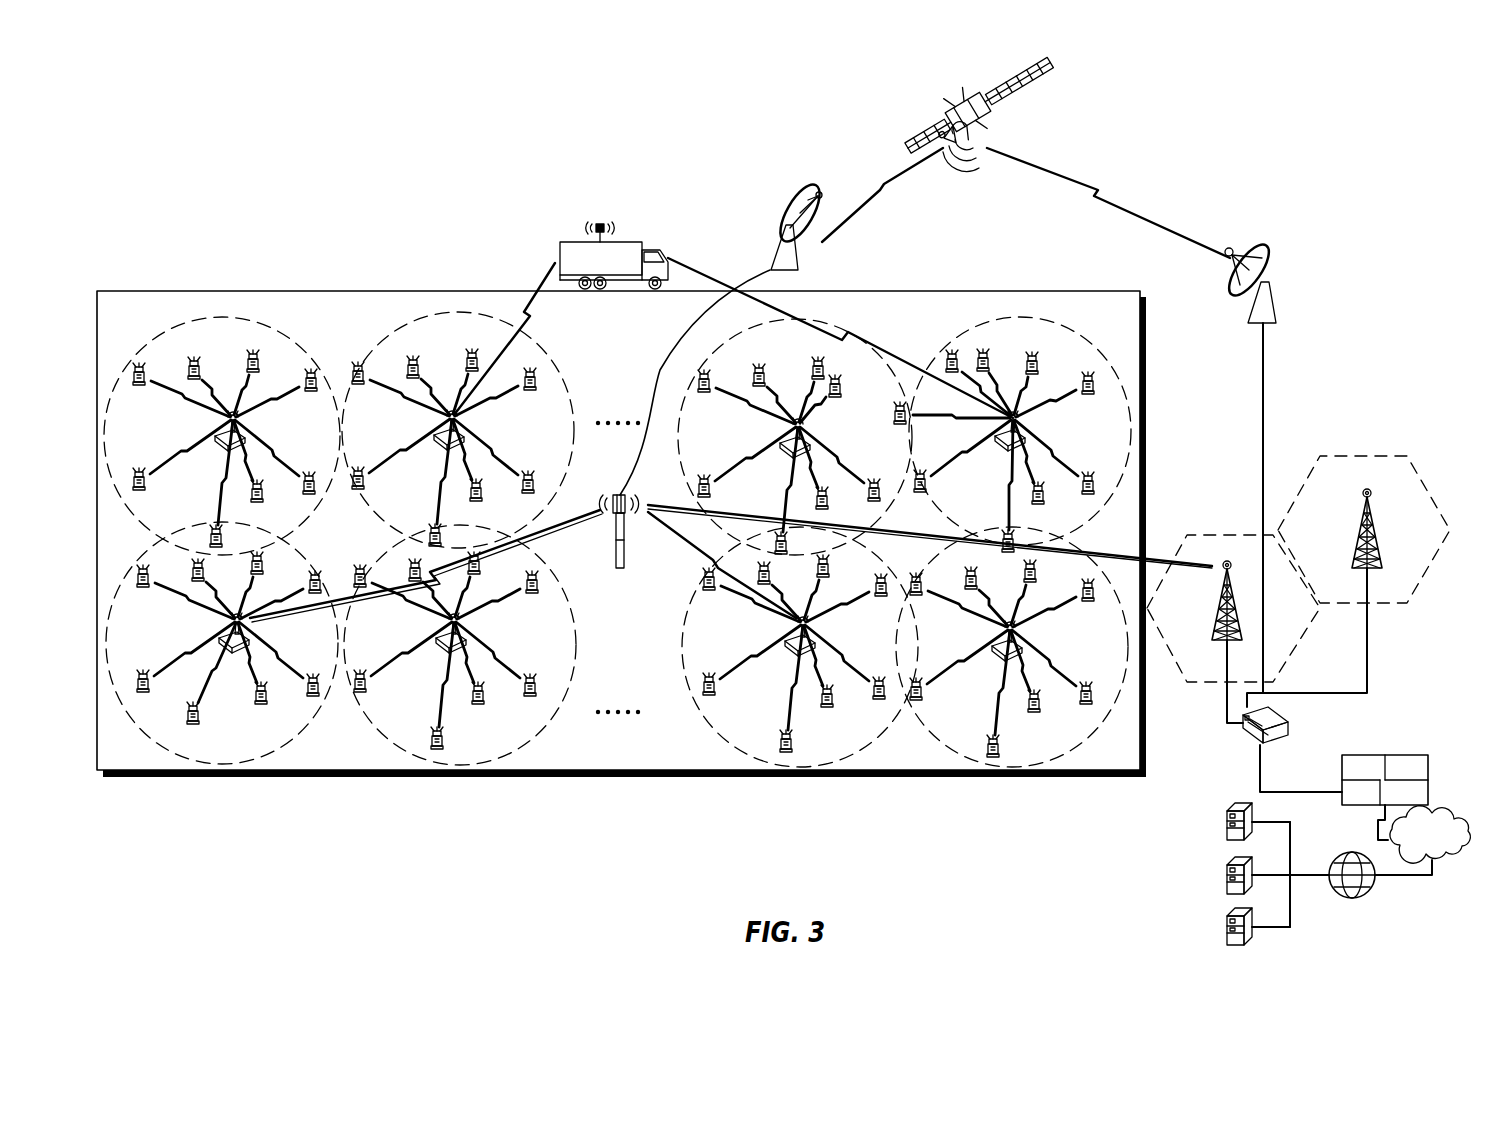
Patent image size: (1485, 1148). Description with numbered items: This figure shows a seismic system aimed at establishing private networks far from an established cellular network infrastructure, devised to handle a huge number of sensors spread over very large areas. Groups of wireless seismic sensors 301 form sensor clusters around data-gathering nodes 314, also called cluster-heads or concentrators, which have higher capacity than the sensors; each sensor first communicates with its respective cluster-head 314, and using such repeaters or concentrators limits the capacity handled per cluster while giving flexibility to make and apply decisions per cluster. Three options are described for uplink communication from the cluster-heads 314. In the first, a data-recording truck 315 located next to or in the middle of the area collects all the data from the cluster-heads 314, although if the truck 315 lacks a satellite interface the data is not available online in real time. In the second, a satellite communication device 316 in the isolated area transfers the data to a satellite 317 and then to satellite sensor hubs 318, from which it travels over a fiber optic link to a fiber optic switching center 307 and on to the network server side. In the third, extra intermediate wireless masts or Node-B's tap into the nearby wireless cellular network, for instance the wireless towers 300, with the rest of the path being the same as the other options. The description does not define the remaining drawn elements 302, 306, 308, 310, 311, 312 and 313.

The wireless towers 300 is at (1213, 632).
The wireless seismic sensors 301 is at (983, 348).
The cell coverage area 302 is at (1127, 298).
The second base station tower 306 is at (1368, 632).
The fiber optic switching center 307 is at (1290, 735).
The servers 308 is at (1225, 872).
The network controller 310 is at (1408, 755).
The cloud network 311 is at (1445, 851).
The internet 312 is at (1365, 896).
The small cell base station 313 is at (620, 568).
The data-gathering nodes 314 is at (1028, 436).
The data-recording truck 315 is at (568, 242).
The satellite communication device 316 is at (782, 190).
The satellite 317 is at (922, 128).
The satellite sensor hubs 318 is at (1272, 270).